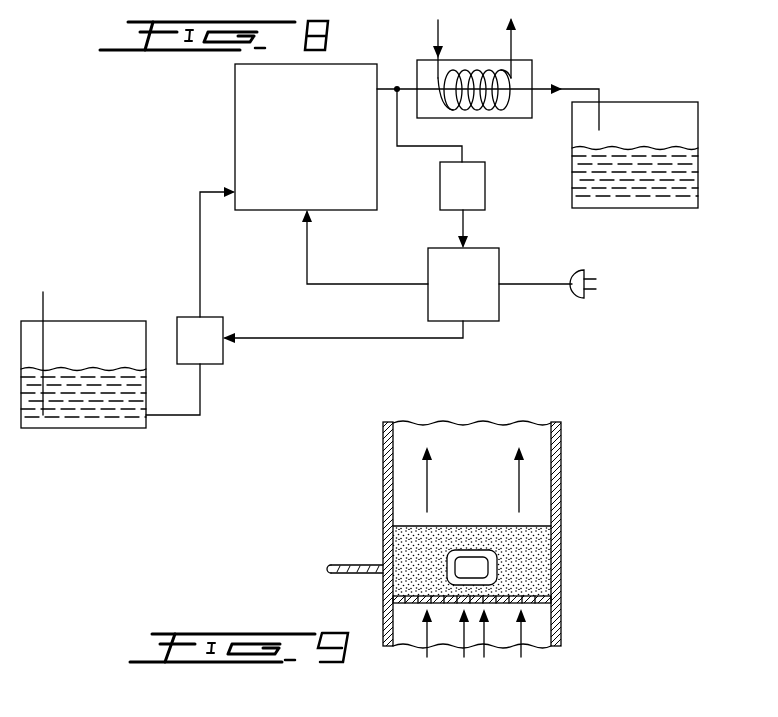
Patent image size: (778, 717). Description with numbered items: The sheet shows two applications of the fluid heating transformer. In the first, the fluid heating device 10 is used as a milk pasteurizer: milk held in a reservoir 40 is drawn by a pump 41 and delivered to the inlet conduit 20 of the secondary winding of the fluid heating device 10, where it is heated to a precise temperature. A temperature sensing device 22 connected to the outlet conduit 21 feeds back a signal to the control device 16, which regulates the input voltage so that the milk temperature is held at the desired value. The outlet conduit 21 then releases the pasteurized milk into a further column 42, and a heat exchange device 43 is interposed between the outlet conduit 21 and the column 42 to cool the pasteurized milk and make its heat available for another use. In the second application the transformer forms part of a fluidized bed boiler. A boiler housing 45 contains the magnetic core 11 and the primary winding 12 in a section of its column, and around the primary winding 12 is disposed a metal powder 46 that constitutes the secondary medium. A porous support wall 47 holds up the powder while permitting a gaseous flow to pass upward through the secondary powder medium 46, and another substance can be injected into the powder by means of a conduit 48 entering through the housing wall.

In FIG. 8, the fluid heating device 10 is at (226, 108).
In FIG. 8, the inlet conduit 20 is at (197, 200).
In FIG. 8, the outlet conduit 21 is at (394, 86).
In FIG. 8, the temperature sensing device 22 is at (484, 185).
In FIG. 8, the control device 16 is at (492, 272).
In FIG. 8, the heat exchange device 43 is at (527, 68).
In FIG. 8, the column 42 is at (655, 100).
In FIG. 8, the reservoir 40 is at (98, 321).
In FIG. 8, the pump 41 is at (216, 320).
In FIG. 9, the boiler housing 45 is at (561, 470).
In FIG. 9, the metal powder 46 is at (398, 545).
In FIG. 9, the primary winding 12 is at (495, 560).
In FIG. 9, the magnetic core 11 is at (485, 572).
In FIG. 9, the conduit 48 is at (351, 576).
In FIG. 9, the porous support wall 47 is at (540, 603).